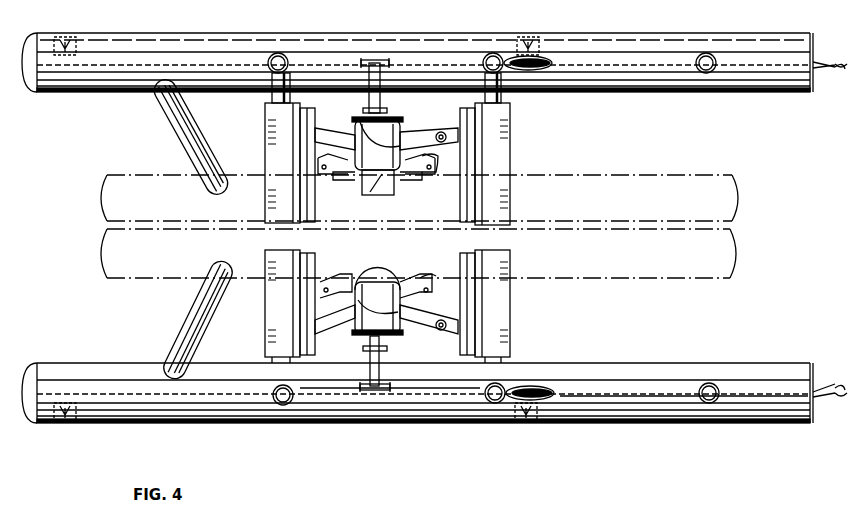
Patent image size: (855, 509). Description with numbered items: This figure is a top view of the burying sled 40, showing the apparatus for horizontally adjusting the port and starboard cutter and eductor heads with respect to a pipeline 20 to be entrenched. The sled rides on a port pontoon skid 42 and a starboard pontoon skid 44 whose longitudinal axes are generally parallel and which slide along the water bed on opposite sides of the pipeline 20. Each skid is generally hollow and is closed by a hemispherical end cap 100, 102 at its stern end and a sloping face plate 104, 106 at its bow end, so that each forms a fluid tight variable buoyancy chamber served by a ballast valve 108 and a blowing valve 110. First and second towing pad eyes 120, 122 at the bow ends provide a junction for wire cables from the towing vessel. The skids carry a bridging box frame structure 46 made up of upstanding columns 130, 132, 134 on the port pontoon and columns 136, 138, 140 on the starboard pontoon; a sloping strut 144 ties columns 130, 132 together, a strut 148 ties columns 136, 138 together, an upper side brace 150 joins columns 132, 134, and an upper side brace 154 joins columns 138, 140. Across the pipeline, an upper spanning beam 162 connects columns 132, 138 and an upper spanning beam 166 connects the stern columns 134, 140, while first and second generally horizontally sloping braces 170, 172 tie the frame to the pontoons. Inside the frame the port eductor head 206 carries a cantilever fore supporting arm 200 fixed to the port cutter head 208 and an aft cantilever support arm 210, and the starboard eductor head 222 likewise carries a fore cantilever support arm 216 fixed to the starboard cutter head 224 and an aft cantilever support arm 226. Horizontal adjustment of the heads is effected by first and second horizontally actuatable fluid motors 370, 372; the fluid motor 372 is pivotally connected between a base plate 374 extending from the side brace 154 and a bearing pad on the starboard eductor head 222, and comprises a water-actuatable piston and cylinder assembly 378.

The pipeline 20 is at (598, 205).
The burying sled 40 is at (526, 319).
The port pontoon skid 42 is at (118, 80).
The starboard pontoon skid 44 is at (93, 424).
The bridging box frame structure 46 is at (262, 336).
The hemispherical end cap 100 is at (30, 92).
The hemispherical end cap 102 is at (30, 366).
The sloping face plate 104 is at (816, 84).
The sloping face plate 106 is at (812, 371).
The ballast valve 108 is at (528, 36).
The blowing valve 110 is at (75, 40).
The first towing pad eye 120 is at (823, 60).
The second towing pad eye 122 is at (822, 394).
The column 130 is at (714, 56).
The column 132 is at (491, 52).
The column 134 is at (268, 61).
The column 136 is at (711, 404).
The column 138 is at (496, 404).
The column 140 is at (278, 406).
The sloping strut 144 is at (608, 61).
The strut 148 is at (644, 400).
The upper side brace 150 is at (311, 54).
The upper side brace 154 is at (450, 404).
The upper spanning beam 162 is at (505, 114).
The upper spanning beam 166 is at (265, 116).
The first generally horizontally sloping brace 170 is at (175, 123).
The second generally horizontally sloping brace 172 is at (190, 307).
The cantilever fore supporting arm 200 is at (414, 134).
The eductor head 206 is at (376, 185).
The cutter head 208 is at (443, 160).
The cantilever support arm 210 is at (324, 134).
The cantilever support arm 216 is at (422, 326).
The starboard eductor head 222 is at (372, 282).
The starboard cutter head 224 is at (438, 296).
The cantilever support arm 226 is at (330, 334).
The first horizontally actuatable fluid motor 370 is at (380, 70).
The second horizontally actuatable fluid motor 372 is at (362, 374).
The base plate 374 is at (378, 392).
The piston and cylinder assembly 378 is at (402, 396).